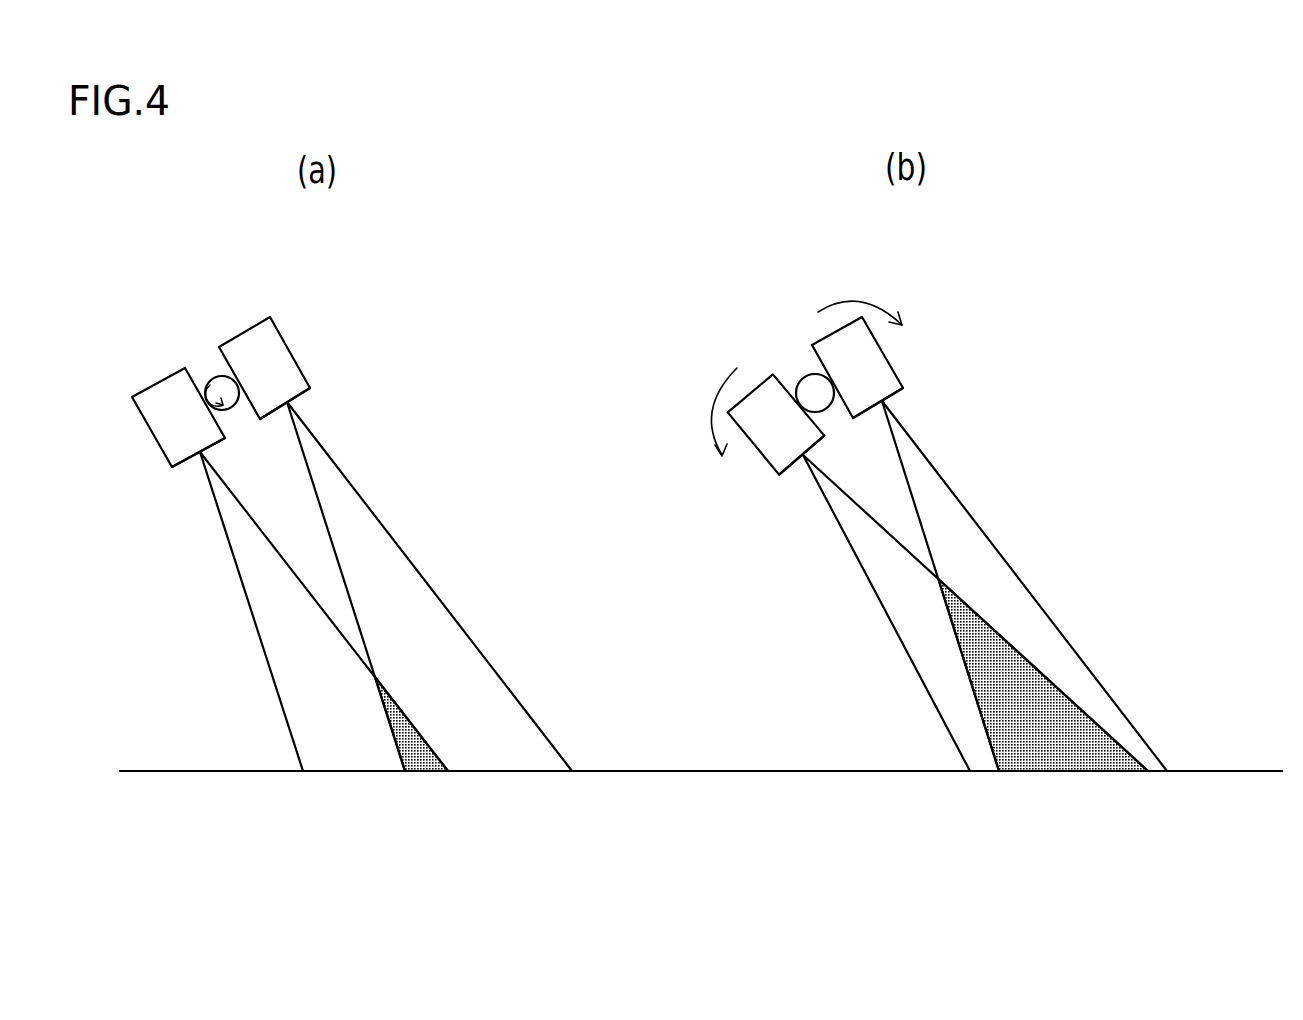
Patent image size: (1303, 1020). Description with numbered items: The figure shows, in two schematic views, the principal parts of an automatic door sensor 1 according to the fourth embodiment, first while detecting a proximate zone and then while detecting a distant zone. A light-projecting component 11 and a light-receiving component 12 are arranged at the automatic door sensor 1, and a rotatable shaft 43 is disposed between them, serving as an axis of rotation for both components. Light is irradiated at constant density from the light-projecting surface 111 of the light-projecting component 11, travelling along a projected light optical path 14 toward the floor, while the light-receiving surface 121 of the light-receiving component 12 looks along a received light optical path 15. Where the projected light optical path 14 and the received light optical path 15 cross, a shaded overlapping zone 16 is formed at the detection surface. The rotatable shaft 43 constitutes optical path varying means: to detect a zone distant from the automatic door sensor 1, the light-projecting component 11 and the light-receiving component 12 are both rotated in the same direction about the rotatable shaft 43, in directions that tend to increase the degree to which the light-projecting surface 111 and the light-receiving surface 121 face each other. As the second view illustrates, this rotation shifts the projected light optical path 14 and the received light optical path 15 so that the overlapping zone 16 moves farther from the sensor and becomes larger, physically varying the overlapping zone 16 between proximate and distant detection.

The automatic door sensor 1 is at (140, 248).
The light-projecting component 11 is at (158, 396).
The light-receiving component 12 is at (278, 347).
The rotatable shaft 43 is at (202, 376).
The light-projecting surface 111 is at (187, 467).
The light-receiving surface 121 is at (296, 402).
The projected light optical path 14 is at (305, 747).
The received light optical path 15 is at (498, 693).
The overlapping zone 16 is at (413, 747).